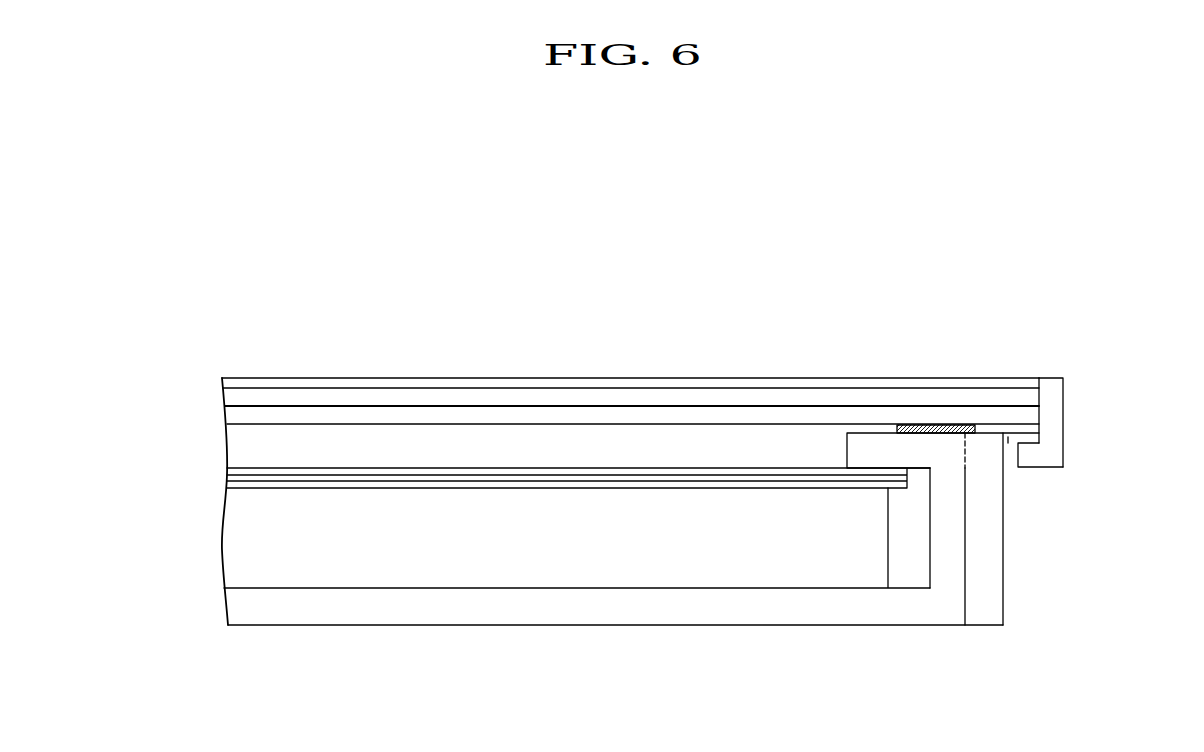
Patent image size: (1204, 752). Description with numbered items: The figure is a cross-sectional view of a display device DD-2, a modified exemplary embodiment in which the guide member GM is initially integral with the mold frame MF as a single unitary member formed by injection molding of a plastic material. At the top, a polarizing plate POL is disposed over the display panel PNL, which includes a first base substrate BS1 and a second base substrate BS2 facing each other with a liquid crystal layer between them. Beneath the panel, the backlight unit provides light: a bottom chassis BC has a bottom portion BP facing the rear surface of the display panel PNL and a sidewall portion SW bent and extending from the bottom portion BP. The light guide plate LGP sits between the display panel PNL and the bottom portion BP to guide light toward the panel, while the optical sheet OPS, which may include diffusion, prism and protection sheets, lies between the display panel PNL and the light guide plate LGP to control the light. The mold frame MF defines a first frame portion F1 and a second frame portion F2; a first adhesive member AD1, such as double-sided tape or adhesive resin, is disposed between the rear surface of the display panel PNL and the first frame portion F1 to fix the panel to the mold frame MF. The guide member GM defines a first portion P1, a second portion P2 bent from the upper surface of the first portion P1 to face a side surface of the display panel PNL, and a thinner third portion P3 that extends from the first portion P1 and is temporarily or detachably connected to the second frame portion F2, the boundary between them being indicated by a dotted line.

The display device DD-2 is at (822, 268).
The display panel PNL is at (123, 385).
The polarizing plate POL is at (233, 382).
The second base substrate BS2 is at (233, 398).
The first base substrate BS1 is at (233, 417).
The first adhesive member AD1 is at (935, 425).
The optical sheet OPS is at (221, 476).
The light guide plate LGP is at (233, 542).
The guide member GM is at (1145, 405).
The first portion P1 is at (1038, 458).
The second portion P2 is at (1057, 407).
The third portion P3 is at (1008, 444).
The mold frame MF is at (1145, 527).
The first frame portion F1 is at (917, 470).
The second frame portion F2 is at (982, 598).
The bottom chassis BC is at (932, 702).
The bottom portion BP is at (852, 615).
The sidewall portion SW is at (928, 558).